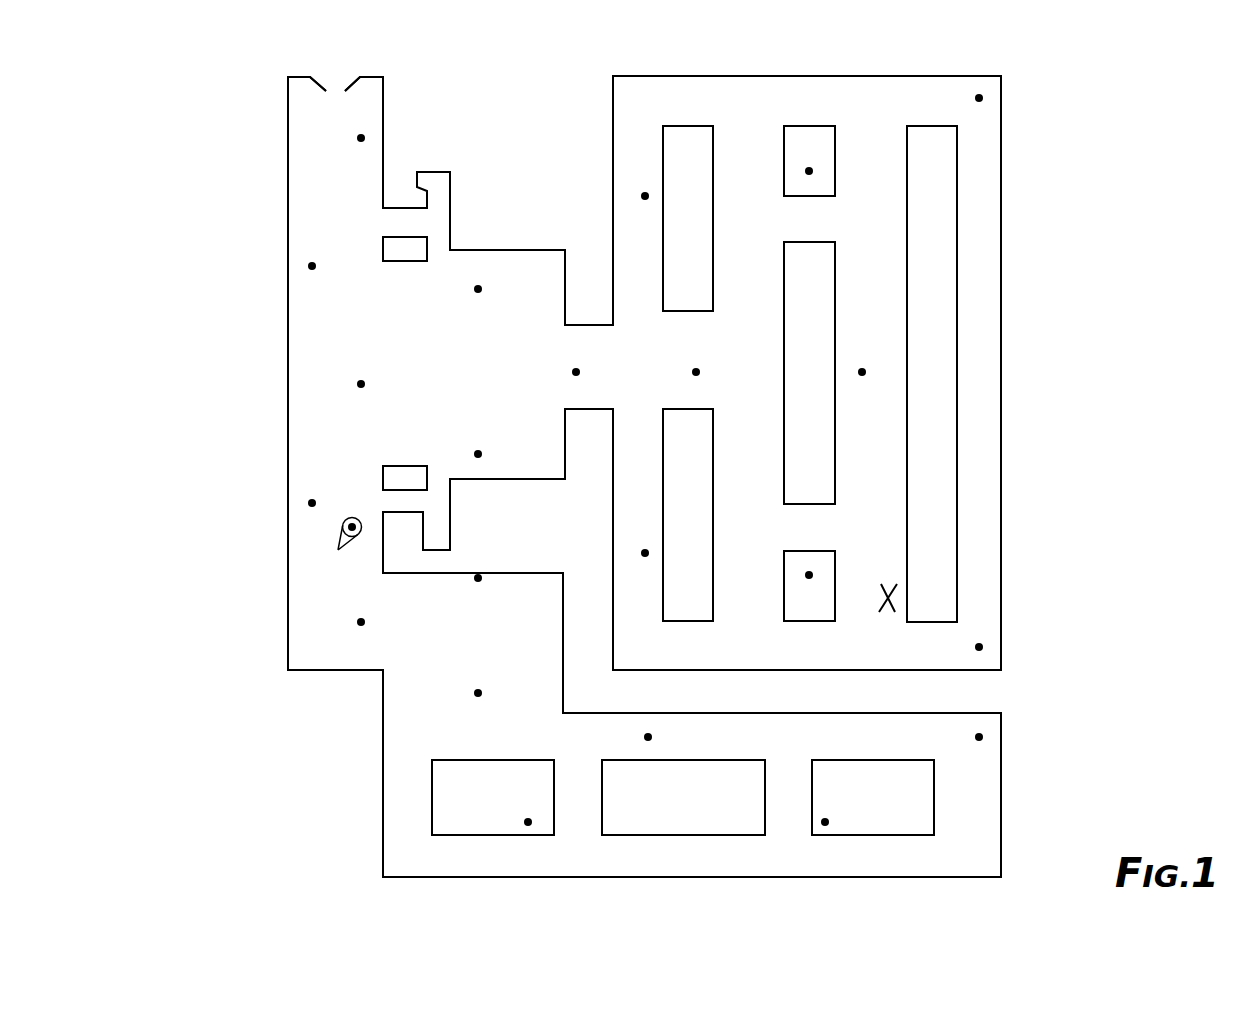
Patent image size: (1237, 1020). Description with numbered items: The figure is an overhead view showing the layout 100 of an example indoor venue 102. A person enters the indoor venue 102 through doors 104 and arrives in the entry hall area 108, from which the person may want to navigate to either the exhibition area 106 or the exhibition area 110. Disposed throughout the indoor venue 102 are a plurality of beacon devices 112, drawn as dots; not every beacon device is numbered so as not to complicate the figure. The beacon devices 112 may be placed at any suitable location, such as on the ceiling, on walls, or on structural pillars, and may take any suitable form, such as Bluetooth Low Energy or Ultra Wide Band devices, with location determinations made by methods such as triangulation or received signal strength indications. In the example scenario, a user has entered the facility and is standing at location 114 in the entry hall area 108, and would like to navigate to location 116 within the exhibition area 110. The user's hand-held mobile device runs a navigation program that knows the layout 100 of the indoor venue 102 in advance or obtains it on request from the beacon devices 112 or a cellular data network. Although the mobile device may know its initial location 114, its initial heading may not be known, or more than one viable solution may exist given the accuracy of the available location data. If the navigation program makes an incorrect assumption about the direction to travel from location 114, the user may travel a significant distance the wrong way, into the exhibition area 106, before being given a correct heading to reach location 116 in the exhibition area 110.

The layout 100 is at (235, 84).
The indoor venue 102 is at (813, 76).
The doors 104 is at (353, 86).
The exhibition area 106 is at (415, 837).
The entry hall area 108 is at (437, 337).
The exhibition area 110 is at (982, 247).
The beacon devices 112 is at (362, 138).
The location 114 is at (339, 547).
The location 116 is at (908, 594).